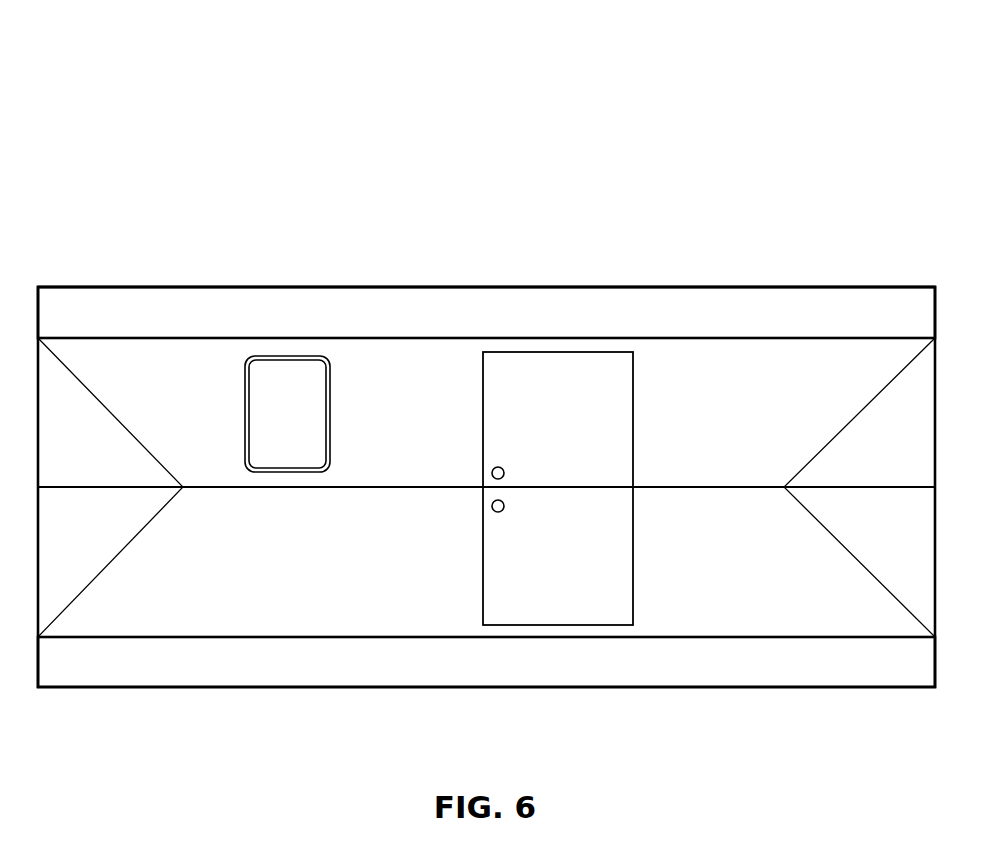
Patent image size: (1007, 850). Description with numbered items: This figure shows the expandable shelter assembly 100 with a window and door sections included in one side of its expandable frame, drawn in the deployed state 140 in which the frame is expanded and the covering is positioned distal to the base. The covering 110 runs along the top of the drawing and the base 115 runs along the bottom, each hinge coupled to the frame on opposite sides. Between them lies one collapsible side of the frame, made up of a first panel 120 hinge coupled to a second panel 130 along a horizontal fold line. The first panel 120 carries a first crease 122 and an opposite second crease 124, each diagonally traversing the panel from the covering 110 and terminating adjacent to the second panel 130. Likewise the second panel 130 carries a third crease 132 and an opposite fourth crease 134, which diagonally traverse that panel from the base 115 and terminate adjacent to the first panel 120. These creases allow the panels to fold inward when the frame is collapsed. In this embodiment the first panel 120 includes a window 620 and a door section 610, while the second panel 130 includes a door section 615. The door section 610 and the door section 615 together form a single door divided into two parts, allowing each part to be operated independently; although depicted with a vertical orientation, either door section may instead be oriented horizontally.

The expandable shelter assembly 100 is at (255, 152).
The covering 110 is at (468, 326).
The base 115 is at (468, 676).
The first panel 120 is at (376, 426).
The second panel 130 is at (376, 580).
The first crease 122 is at (113, 412).
The second crease 124 is at (856, 412).
The third crease 132 is at (113, 562).
The fourth crease 134 is at (852, 562).
The deployed state 140 is at (781, 284).
The door section 610 is at (541, 430).
The door section 615 is at (541, 580).
The window 620 is at (269, 424).